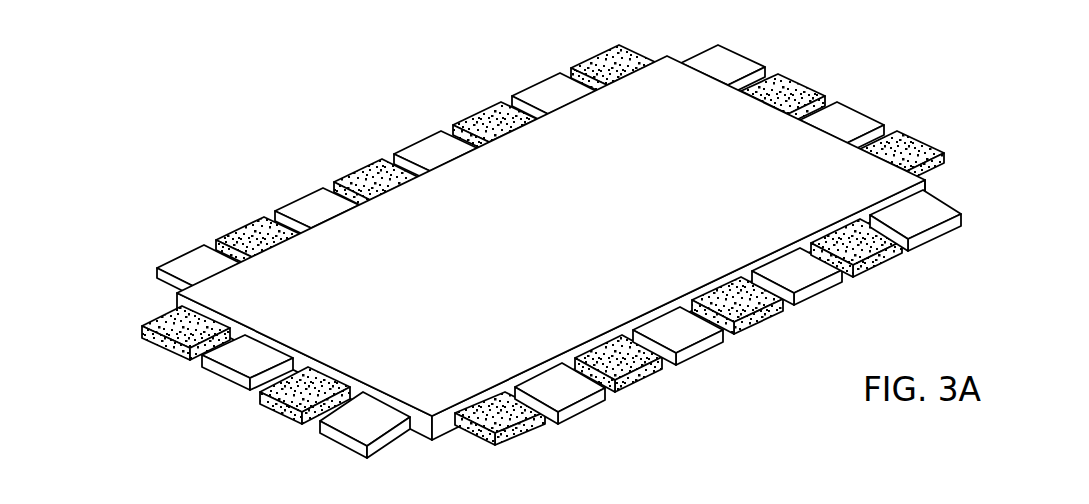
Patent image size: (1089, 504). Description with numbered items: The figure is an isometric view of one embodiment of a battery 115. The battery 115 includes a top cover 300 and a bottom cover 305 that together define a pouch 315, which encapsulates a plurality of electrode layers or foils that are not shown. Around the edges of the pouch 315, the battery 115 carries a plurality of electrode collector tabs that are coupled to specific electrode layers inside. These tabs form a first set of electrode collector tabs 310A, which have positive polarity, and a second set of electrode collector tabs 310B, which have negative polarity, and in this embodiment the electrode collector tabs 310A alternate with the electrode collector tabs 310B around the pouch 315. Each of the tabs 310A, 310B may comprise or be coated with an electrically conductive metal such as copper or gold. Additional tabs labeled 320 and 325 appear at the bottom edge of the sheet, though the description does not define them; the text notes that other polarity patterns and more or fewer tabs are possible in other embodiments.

The battery 115 is at (590, 270).
The top cover 300 is at (740, 135).
The bottom cover 305 is at (423, 440).
The first set of electrode collector tabs 310A is at (185, 268).
The second set of electrode collector tabs 310B is at (242, 238).
The pouch 315 is at (940, 188).
The contact pad 320 is at (500, 448).
The contact pad 325 is at (797, 376).